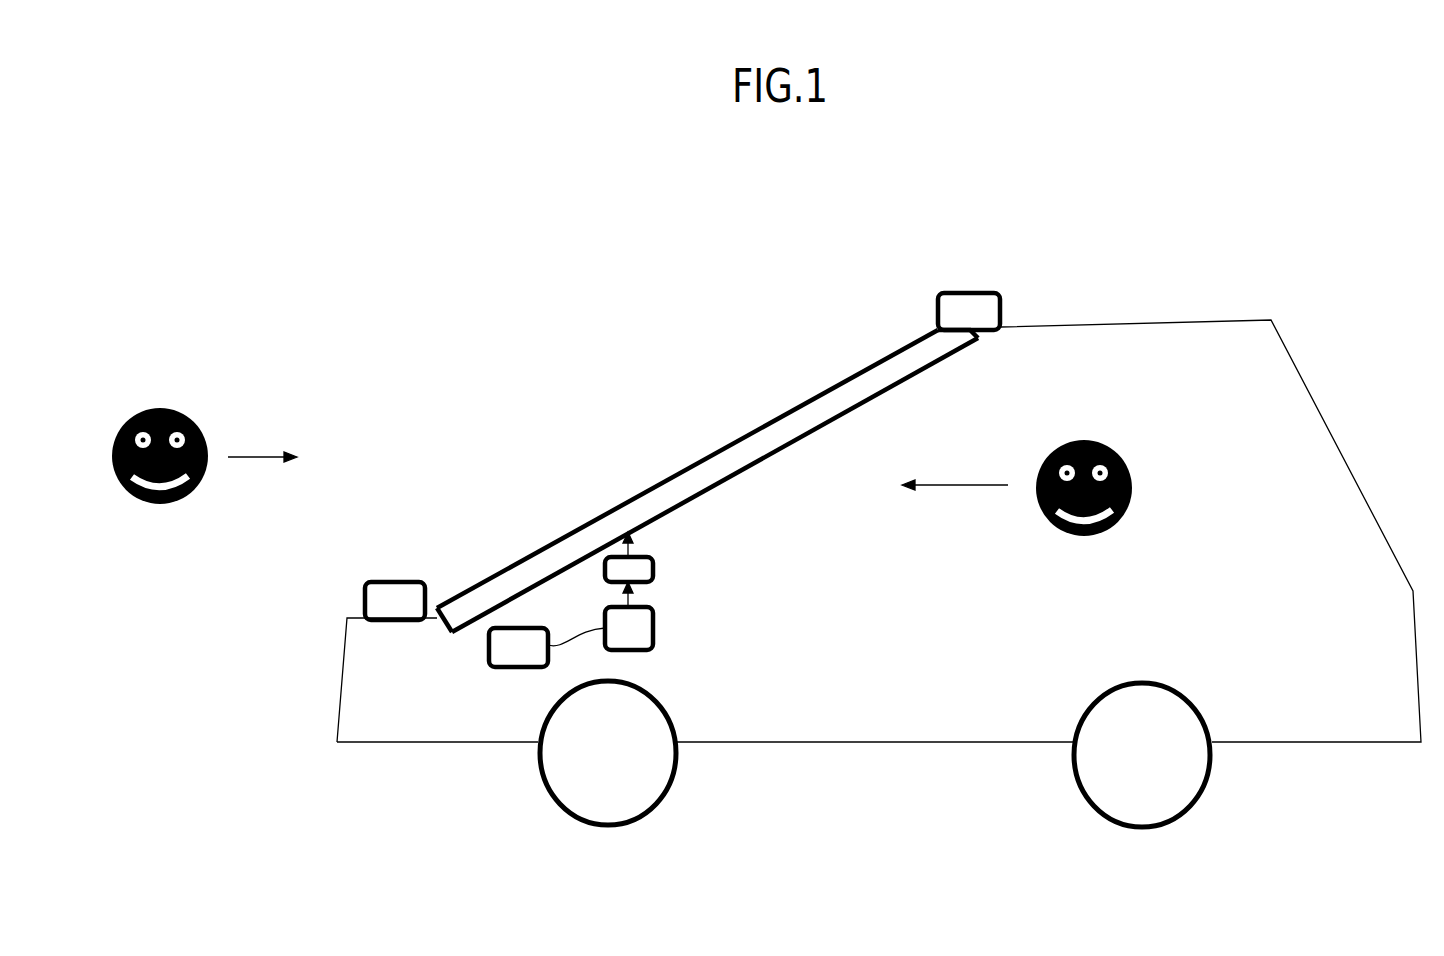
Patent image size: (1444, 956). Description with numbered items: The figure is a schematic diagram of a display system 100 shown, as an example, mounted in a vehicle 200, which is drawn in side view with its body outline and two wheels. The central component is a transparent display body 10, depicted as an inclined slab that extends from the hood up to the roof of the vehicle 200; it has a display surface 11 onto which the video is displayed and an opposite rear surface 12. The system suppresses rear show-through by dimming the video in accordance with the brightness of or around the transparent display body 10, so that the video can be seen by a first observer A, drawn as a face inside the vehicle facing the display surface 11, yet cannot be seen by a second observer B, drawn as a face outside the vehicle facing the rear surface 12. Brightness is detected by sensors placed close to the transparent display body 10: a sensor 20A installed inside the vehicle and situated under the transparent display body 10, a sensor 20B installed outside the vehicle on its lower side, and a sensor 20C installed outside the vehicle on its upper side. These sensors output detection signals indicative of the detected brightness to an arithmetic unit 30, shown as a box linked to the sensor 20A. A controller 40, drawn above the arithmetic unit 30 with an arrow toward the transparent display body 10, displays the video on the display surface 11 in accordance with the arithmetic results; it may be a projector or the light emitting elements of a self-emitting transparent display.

The display system 100 is at (377, 291).
The vehicle 200 is at (1178, 320).
The transparent display body 10 is at (707, 474).
The display surface 11 is at (852, 410).
The rear surface 12 is at (827, 393).
The sensor 20A is at (489, 650).
The sensor 20B is at (395, 582).
The sensor 20C is at (972, 293).
The arithmetic unit 30 is at (655, 628).
The controller 40 is at (655, 570).
The first observer A is at (1084, 440).
The second observer B is at (162, 408).